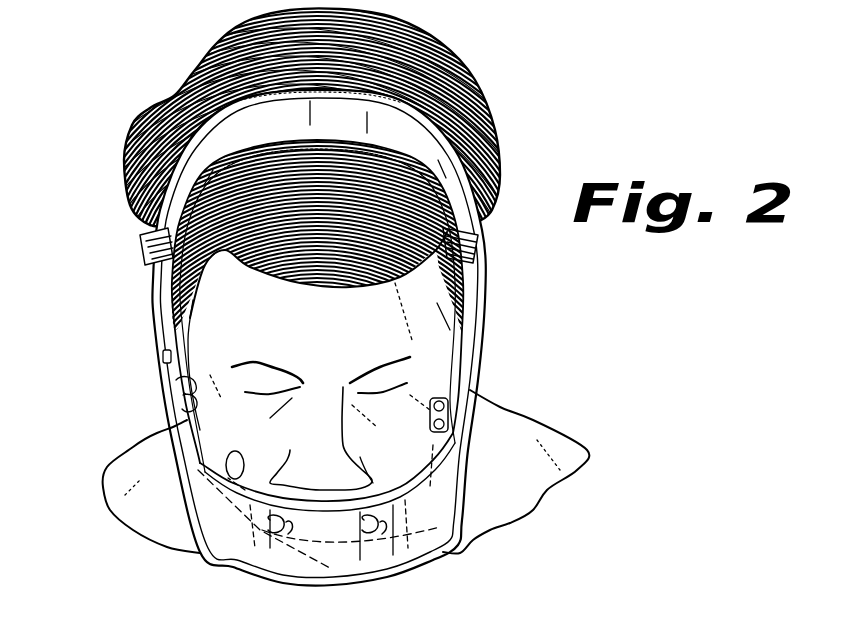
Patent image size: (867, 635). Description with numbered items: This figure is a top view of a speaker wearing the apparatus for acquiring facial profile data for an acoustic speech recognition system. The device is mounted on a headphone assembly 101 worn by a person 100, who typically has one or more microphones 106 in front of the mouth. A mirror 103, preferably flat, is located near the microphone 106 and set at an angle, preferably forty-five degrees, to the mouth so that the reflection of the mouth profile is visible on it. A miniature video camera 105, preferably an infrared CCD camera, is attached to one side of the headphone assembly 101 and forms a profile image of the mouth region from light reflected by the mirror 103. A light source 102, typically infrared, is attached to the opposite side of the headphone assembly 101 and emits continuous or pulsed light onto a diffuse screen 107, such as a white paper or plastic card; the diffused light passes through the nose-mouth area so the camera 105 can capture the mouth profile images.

The person 100 is at (512, 146).
The headphone assembly 101 is at (162, 272).
The light source 102 is at (452, 410).
The mirror 103 is at (240, 460).
The miniature video camera 105 is at (190, 393).
The microphone 106 is at (200, 553).
The diffuse screen 107 is at (423, 480).